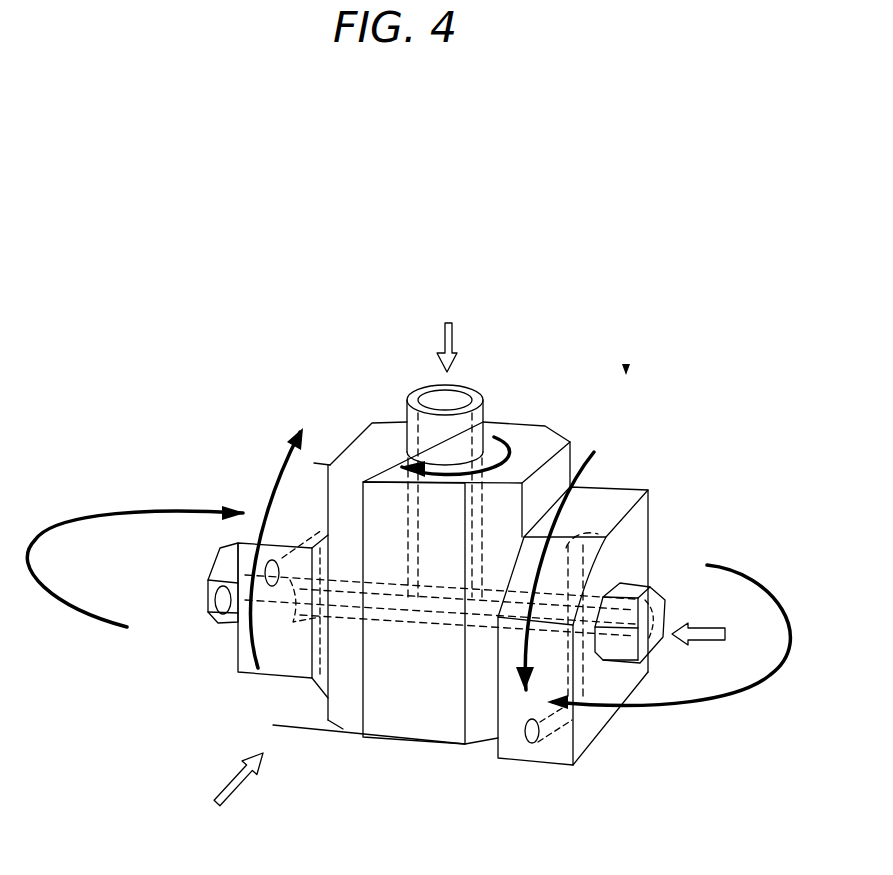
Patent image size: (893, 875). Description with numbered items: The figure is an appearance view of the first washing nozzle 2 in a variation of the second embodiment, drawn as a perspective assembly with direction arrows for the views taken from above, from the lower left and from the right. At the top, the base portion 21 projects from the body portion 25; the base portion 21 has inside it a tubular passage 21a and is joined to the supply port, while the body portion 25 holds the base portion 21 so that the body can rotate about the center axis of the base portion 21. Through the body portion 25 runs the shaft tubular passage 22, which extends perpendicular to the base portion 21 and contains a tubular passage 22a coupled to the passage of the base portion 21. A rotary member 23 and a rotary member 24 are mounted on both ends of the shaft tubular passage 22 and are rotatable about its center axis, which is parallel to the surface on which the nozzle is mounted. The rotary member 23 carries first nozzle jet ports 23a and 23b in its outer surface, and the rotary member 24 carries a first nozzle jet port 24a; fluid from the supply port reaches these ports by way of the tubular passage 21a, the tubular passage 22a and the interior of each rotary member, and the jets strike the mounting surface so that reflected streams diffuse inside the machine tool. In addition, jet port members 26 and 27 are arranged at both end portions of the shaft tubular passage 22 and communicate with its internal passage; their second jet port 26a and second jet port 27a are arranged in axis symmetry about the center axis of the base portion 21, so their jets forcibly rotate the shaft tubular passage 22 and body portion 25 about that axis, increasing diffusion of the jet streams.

The first washing nozzle 2 is at (408, 565).
The base portion 21 is at (483, 398).
The tubular passage 21a is at (463, 392).
The shaft tubular passage 22 is at (428, 625).
The tubular passage 22a is at (383, 601).
The rotary member 23 is at (606, 492).
The first nozzle jet port 23a is at (530, 738).
The first nozzle jet port 23b is at (622, 517).
The rotary member 24 is at (312, 495).
The first nozzle jet port 24a is at (262, 562).
The body portion 25 is at (530, 435).
The jet port member 26 is at (647, 653).
The second jet port 26a is at (655, 612).
The jet port member 27 is at (220, 570).
The second jet port 27a is at (222, 598).